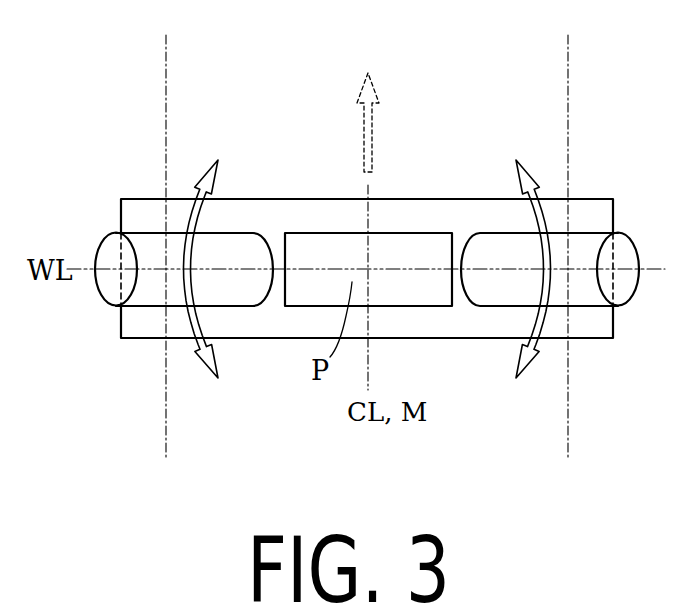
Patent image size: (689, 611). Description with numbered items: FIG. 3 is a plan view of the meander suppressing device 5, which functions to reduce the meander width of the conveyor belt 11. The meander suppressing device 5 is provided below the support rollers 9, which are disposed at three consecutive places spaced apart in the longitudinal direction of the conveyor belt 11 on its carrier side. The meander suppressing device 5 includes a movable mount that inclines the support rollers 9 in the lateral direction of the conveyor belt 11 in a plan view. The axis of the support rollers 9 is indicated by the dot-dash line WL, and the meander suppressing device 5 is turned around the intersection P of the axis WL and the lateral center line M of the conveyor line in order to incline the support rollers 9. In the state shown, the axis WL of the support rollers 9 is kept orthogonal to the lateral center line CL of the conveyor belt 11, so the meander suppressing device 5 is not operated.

The meander suppressing device 5 is at (473, 332).
The support rollers 9 is at (235, 243).
The conveyor belt 11 is at (555, 130).